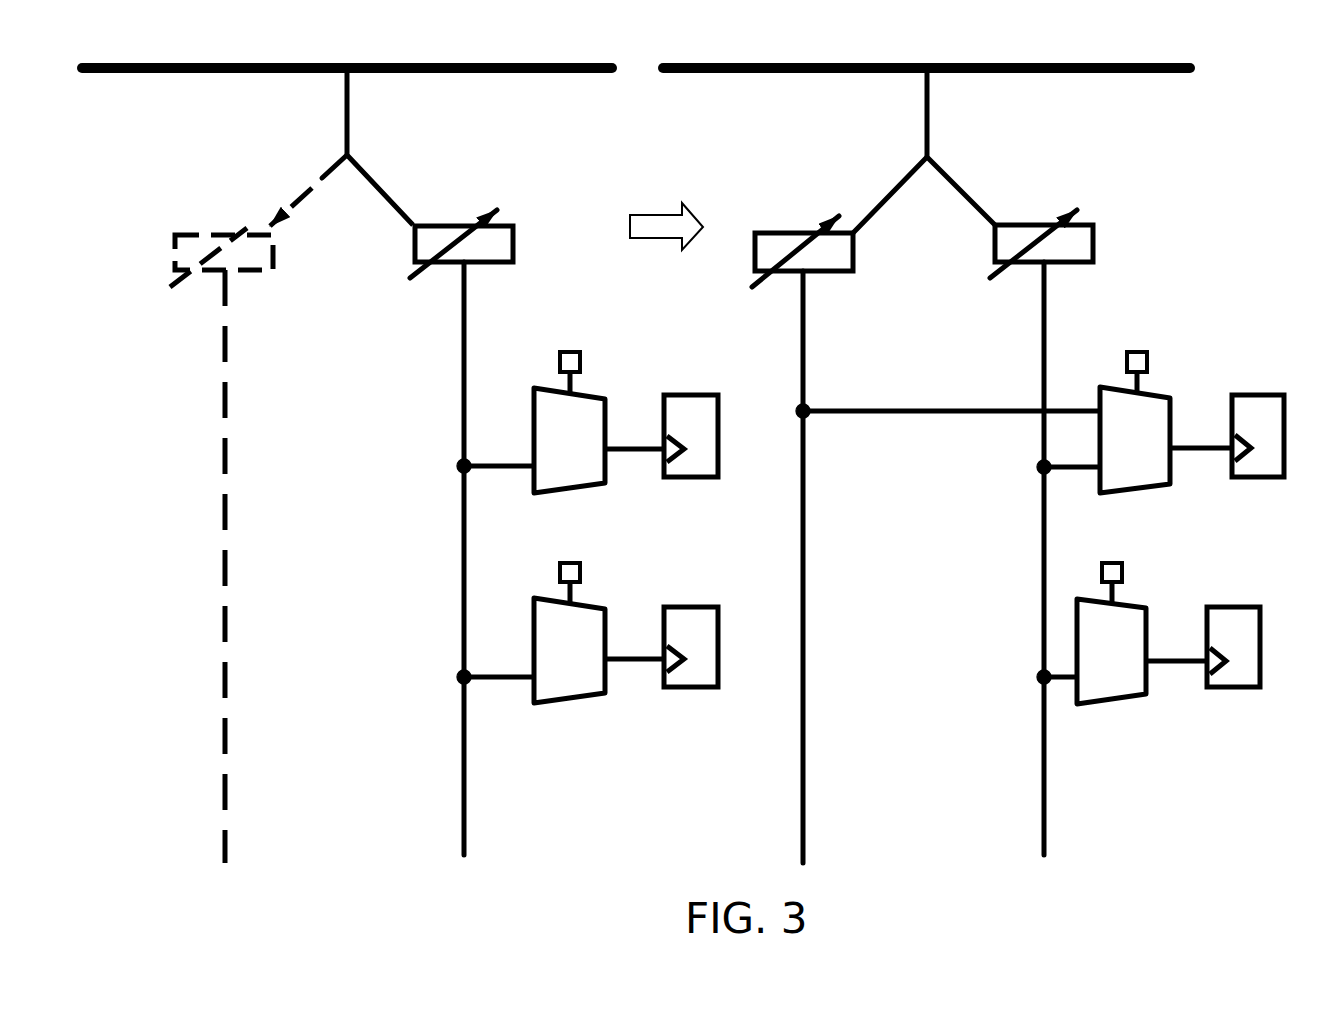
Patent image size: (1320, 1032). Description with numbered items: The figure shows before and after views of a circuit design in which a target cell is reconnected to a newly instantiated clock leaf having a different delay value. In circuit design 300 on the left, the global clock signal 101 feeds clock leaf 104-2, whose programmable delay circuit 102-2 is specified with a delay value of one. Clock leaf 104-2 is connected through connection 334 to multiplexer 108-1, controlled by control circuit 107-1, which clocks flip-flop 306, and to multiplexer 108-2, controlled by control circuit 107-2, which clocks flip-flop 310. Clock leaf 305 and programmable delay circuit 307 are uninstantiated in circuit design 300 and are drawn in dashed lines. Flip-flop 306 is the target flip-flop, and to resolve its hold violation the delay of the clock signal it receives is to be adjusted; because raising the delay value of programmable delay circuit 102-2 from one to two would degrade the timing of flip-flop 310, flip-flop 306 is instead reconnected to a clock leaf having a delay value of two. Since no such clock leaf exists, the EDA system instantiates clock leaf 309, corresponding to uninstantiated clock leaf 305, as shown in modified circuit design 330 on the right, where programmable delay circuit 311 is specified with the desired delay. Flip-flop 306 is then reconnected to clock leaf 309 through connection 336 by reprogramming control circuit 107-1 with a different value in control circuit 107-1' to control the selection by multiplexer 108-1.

The global clock signal 101 is at (470, 63).
The programmable delay circuit 102-2 is at (516, 243).
The clock leaf 104-2 is at (466, 362).
The control circuit 107-1 is at (605, 350).
The control circuit 107-1' is at (1172, 350).
The control circuit 107-2 is at (574, 560).
The multiplexer 108-1 is at (590, 400).
The multiplexer 108-2 is at (590, 607).
The flip-flop 306 is at (677, 395).
The flip-flop 310 is at (678, 607).
The circuit design 300 is at (158, 797).
The clock leaf 305 is at (220, 360).
The programmable delay circuit 307 is at (213, 235).
The clock leaf 309 is at (800, 360).
The programmable delay circuit 311 is at (792, 232).
The modified circuit design 330 is at (757, 774).
The connection 334 is at (496, 472).
The connection 336 is at (910, 415).